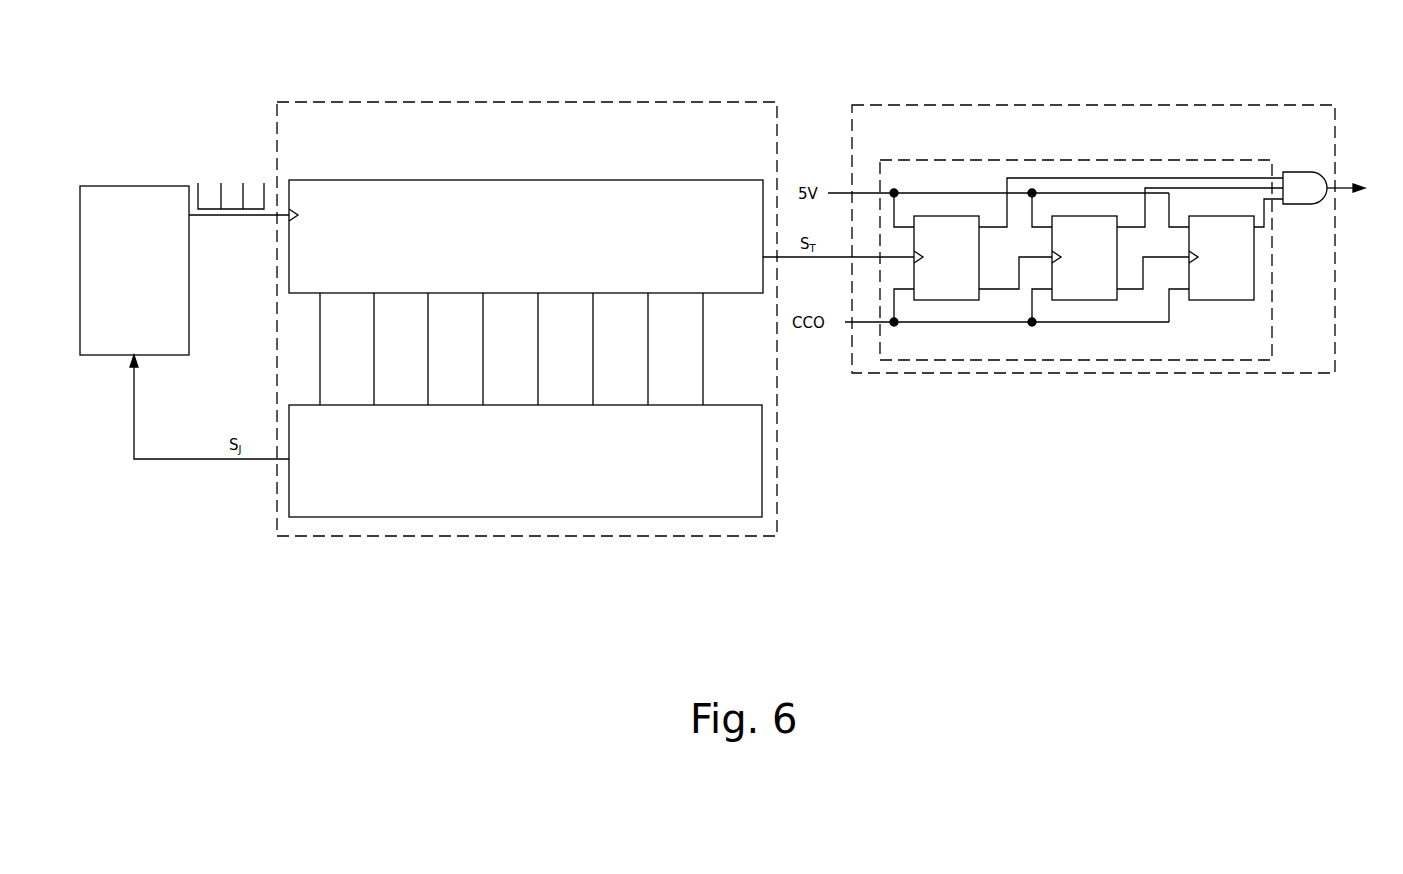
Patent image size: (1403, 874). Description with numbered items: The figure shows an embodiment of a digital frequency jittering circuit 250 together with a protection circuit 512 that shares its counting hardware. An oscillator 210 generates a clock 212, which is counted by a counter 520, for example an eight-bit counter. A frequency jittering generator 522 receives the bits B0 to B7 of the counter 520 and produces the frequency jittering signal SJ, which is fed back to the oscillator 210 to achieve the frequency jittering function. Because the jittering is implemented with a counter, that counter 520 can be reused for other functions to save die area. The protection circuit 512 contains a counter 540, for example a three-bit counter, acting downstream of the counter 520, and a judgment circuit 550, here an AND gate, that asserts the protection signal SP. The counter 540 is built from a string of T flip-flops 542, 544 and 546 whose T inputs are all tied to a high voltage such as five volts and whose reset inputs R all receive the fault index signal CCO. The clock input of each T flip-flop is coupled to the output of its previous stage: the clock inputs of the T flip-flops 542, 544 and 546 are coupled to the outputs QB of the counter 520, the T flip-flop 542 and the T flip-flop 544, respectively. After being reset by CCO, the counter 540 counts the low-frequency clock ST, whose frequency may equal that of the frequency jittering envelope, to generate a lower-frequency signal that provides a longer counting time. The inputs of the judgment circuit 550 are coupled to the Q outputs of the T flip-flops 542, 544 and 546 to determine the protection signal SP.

The oscillator 210 is at (160, 355).
The clock 212 is at (220, 198).
The frequency jittering circuit 250 is at (506, 100).
The counter 520 is at (513, 180).
The frequency jittering generator 522 is at (762, 466).
The protection circuit 512 is at (1107, 105).
The counter 540 is at (1073, 160).
The T flip-flop 542 is at (945, 302).
The T flip-flop 544 is at (1083, 302).
The T flip-flop 546 is at (1220, 302).
The judgment circuit 550 is at (1293, 172).